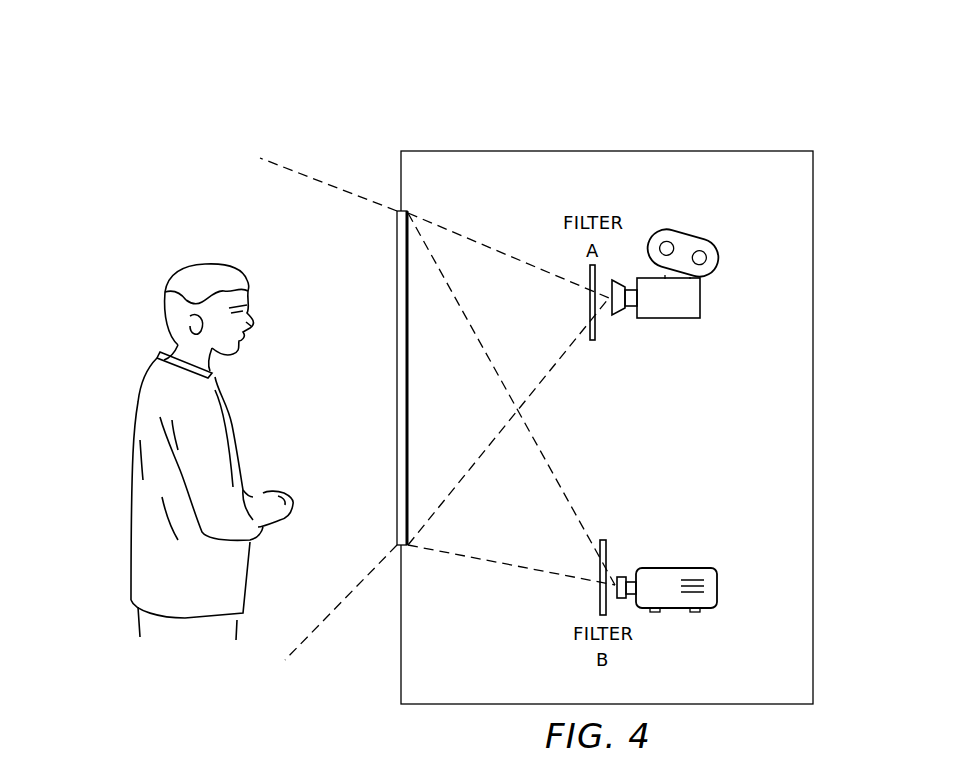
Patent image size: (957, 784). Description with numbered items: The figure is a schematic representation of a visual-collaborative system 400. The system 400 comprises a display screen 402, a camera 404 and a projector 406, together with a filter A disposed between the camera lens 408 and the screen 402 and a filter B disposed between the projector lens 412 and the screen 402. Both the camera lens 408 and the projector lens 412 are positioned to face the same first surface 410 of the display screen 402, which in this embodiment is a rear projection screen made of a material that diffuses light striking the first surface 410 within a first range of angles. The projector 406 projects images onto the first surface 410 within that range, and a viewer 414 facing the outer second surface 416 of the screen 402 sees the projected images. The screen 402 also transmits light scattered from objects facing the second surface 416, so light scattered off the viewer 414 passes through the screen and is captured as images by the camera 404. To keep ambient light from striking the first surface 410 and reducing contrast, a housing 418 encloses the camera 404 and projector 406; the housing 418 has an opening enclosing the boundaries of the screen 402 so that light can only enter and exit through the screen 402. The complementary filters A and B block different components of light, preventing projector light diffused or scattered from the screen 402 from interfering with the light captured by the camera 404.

The visual-collaborative system 400 is at (683, 112).
The display screen 402 is at (401, 378).
The camera 404 is at (674, 263).
The projector 406 is at (678, 605).
The camera lens 408 is at (619, 316).
The first surface 410 is at (401, 378).
The projector lens 412 is at (622, 574).
The viewer 414 is at (140, 380).
The second surface 416 is at (397, 273).
The housing 418 is at (816, 374).